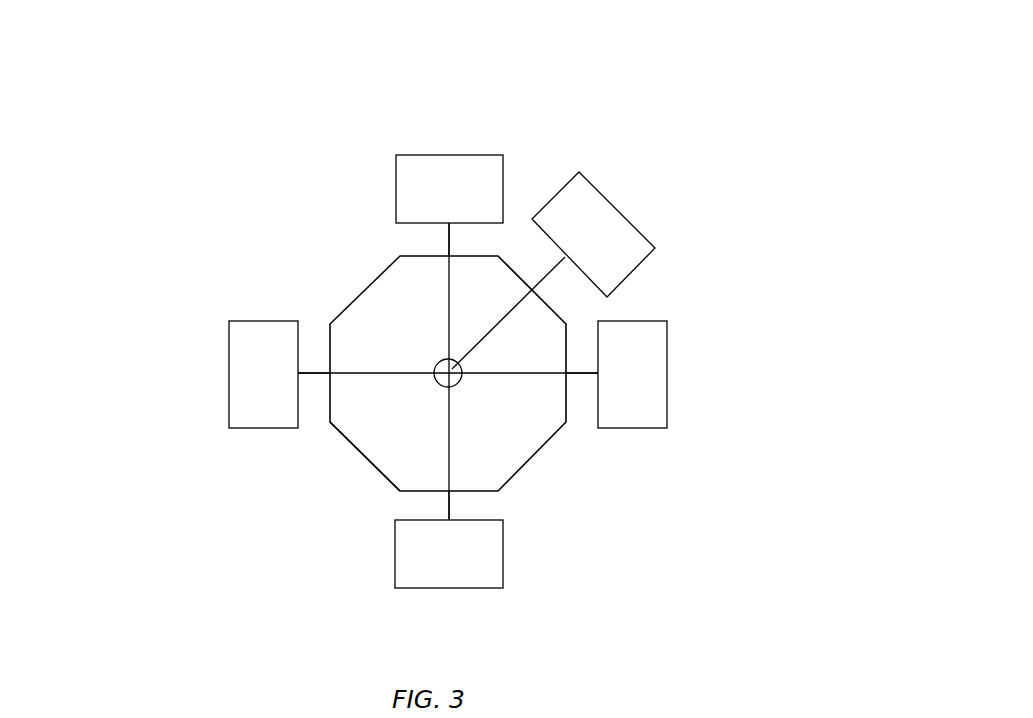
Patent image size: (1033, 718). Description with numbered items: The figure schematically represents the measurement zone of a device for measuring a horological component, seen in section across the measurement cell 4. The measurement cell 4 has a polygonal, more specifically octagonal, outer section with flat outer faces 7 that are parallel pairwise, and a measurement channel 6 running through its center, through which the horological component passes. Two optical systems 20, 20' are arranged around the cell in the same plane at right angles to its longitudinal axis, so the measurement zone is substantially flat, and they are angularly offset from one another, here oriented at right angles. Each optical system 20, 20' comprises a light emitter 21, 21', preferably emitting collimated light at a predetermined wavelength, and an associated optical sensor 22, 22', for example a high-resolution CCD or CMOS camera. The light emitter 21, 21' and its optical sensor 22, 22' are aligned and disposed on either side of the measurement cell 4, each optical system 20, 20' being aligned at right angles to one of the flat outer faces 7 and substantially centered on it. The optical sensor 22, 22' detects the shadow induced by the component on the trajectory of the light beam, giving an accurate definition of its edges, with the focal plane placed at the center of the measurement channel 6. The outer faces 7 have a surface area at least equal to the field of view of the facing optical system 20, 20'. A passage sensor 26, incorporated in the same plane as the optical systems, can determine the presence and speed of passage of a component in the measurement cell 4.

The measurement cell 4 is at (365, 285).
The measurement channel 6 is at (460, 383).
The outer faces 7 is at (372, 453).
The optical system 20 is at (710, 349).
The optical system 20' is at (440, 140).
The light emitter 21 is at (681, 374).
The light emitter 21' is at (491, 147).
The optical sensor 22 is at (187, 374).
The optical sensor 22' is at (580, 553).
The passage sensor 26 is at (625, 236).